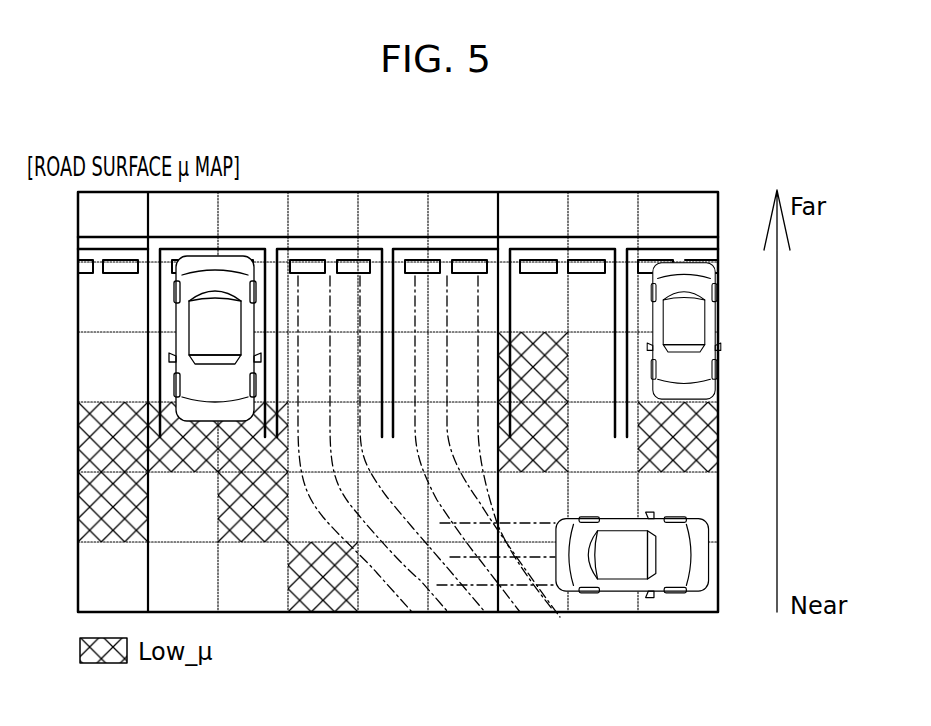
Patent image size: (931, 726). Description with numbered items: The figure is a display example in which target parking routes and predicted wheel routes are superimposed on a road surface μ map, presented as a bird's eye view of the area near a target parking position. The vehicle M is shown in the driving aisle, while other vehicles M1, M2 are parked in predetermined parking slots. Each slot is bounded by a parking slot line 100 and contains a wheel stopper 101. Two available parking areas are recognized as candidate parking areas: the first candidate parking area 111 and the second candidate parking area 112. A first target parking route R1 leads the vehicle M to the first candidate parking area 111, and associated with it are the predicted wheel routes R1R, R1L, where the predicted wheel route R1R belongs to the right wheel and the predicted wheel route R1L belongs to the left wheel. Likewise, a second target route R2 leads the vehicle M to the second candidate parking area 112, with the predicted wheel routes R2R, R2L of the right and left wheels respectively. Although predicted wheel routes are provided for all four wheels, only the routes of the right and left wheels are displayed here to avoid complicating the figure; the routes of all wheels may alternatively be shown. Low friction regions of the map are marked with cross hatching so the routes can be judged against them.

The parking slot line 100 is at (487, 243).
The wheel stopper 101 is at (588, 264).
The first candidate parking area 111 is at (345, 254).
The second candidate parking area 112 is at (440, 254).
The vehicle M is at (668, 568).
The other vehicle M1 is at (230, 292).
The other vehicle M2 is at (683, 286).
The first target parking route R1 is at (389, 608).
The predicted wheel route of the right wheel R1R is at (366, 606).
The predicted wheel route of the left wheel R1L is at (424, 606).
The second target route R2 is at (556, 606).
The predicted wheel route of the right wheel R2R is at (480, 606).
The predicted wheel route of the left wheel R2L is at (536, 606).